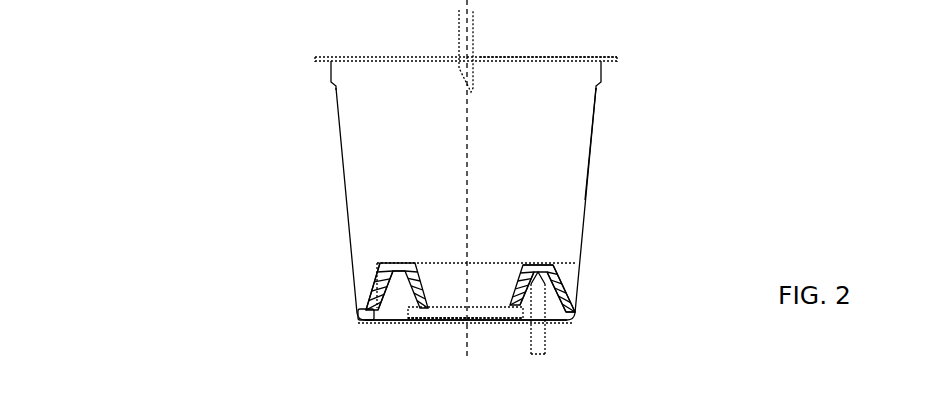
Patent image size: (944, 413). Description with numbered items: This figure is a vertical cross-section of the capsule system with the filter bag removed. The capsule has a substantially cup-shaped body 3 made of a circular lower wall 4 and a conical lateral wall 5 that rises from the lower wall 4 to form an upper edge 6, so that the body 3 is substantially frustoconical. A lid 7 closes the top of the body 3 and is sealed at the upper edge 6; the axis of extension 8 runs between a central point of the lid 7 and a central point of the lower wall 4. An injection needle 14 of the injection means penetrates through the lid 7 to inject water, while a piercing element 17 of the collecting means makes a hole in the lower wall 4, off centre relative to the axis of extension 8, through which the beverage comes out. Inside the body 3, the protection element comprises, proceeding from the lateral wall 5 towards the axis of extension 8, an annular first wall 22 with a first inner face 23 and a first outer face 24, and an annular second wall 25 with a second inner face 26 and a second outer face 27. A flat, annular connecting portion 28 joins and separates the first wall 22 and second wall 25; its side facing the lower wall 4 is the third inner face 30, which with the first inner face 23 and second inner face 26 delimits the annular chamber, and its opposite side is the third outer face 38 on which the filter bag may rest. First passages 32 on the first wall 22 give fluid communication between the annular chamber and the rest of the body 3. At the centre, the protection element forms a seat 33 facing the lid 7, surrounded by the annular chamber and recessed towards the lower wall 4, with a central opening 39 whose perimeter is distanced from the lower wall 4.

The cup-shaped body 3 is at (385, 128).
The lower wall 4 is at (553, 325).
The lateral wall 5 is at (593, 108).
The upper edge 6 is at (315, 59).
The lid 7 is at (573, 57).
The axis of extension 8 is at (465, 178).
The injection needle 14 is at (458, 44).
The piercing element 17 is at (538, 343).
The first wall 22 is at (565, 303).
The first inner face 23 is at (383, 307).
The first outer face 24 is at (367, 278).
The second wall 25 is at (553, 290).
The second inner face 26 is at (403, 295).
The second outer face 27 is at (447, 268).
The connecting portion 28 is at (388, 262).
The third inner face 30 is at (392, 280).
The first passages 32 is at (427, 315).
The seat 33 is at (515, 300).
The third outer face 38 is at (543, 258).
The central opening 39 is at (442, 305).